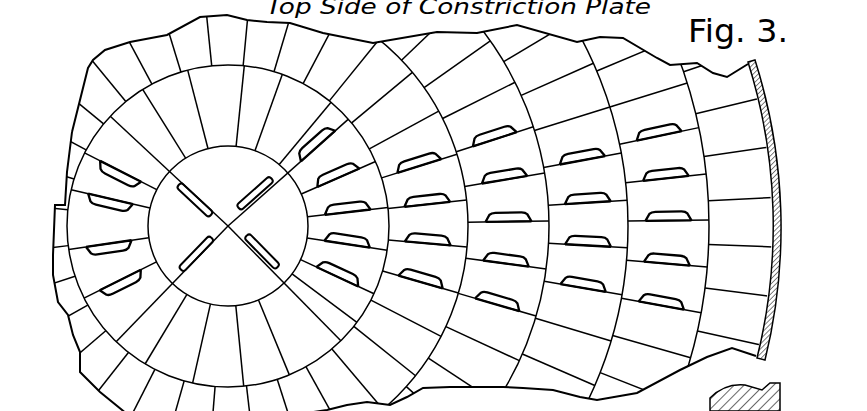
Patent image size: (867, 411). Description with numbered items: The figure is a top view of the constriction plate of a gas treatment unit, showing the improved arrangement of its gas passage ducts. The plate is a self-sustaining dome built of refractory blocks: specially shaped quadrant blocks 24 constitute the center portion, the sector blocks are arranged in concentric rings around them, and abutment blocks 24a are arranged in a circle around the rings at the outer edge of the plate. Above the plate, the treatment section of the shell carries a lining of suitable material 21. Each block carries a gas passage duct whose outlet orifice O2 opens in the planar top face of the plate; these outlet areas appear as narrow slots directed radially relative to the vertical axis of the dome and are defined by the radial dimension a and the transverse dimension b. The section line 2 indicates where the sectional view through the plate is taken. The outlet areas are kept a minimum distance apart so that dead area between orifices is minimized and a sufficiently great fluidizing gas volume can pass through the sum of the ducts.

The quadrant blocks 24 is at (239, 181).
The abutment blocks 24a is at (748, 305).
The lining of suitable material 21 is at (752, 388).
The section line 2- 2 is at (78, 227).
The radial dimension a is at (302, 240).
The transverse dimension b is at (262, 236).
The outlet orifice O2 is at (188, 219).